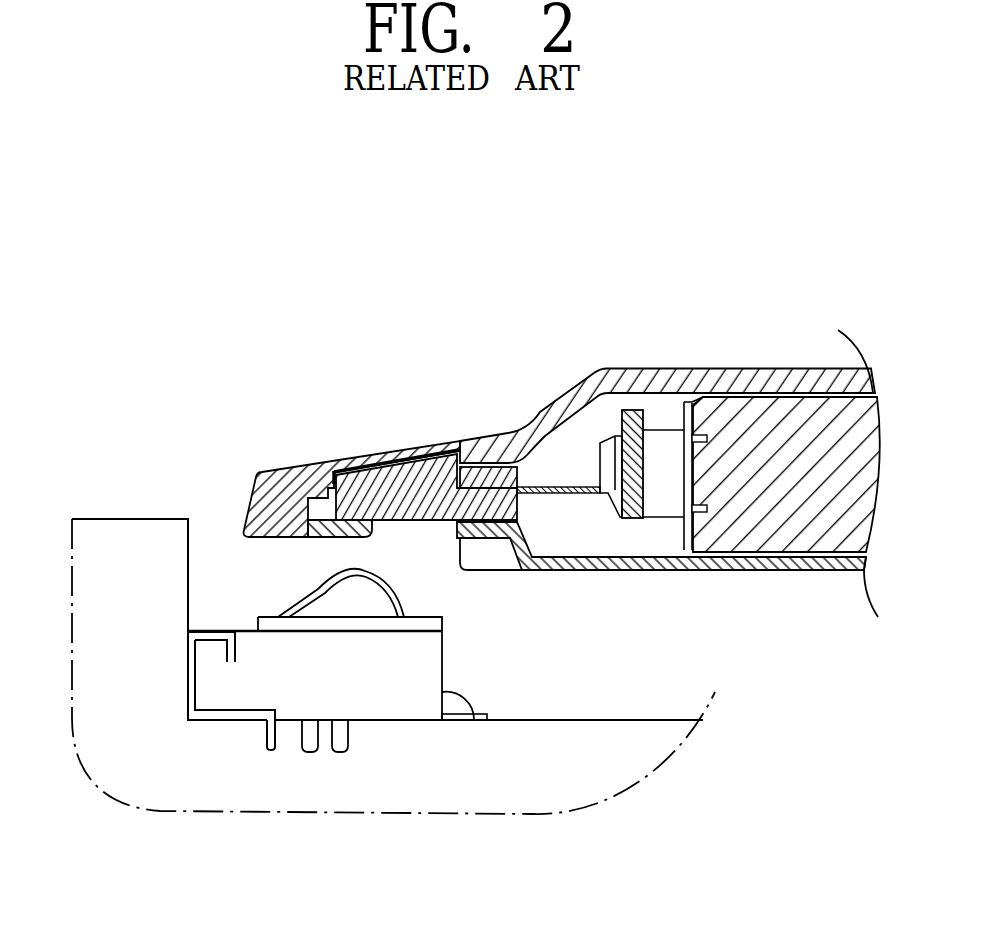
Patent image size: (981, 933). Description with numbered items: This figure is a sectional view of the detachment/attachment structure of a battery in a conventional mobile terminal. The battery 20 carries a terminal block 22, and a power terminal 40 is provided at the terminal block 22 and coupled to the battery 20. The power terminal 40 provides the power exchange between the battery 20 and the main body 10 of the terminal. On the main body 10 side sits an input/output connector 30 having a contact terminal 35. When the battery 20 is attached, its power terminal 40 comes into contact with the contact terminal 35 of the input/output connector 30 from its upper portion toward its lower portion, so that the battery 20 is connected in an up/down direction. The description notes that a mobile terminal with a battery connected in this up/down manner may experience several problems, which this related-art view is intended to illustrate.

The main body 10 is at (125, 501).
The battery 20 is at (711, 348).
The terminal block 22 is at (395, 480).
The input/output connector 30 is at (470, 720).
The contact terminal 35 is at (393, 613).
The power terminal 40 is at (443, 527).